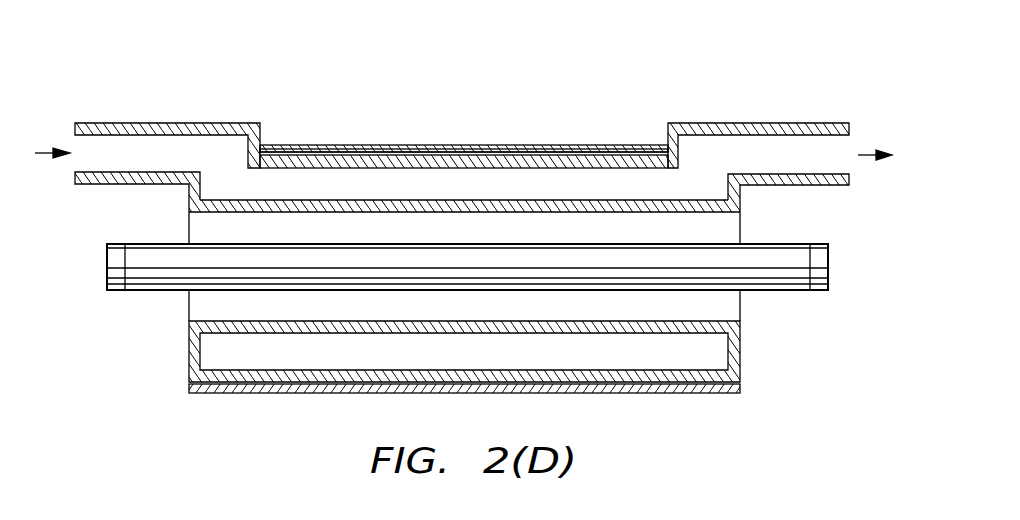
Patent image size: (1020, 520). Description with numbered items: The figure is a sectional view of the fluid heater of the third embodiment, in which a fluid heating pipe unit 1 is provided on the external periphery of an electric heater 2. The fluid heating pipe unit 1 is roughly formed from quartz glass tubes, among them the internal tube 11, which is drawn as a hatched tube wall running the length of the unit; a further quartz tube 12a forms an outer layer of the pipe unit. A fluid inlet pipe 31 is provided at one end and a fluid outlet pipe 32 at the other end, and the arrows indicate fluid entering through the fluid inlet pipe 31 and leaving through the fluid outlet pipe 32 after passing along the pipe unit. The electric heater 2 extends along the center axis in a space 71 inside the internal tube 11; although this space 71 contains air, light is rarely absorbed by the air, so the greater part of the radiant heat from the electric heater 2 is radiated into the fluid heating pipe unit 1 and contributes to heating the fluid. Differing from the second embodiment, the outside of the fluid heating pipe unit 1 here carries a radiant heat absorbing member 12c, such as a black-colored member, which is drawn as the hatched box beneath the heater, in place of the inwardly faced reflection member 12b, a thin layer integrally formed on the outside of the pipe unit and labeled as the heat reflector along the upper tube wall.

The fluid heating pipe unit 1 is at (278, 395).
The electric heater 2 is at (127, 290).
The internal tube 11 is at (393, 200).
The quartz tube 12a is at (333, 145).
The inwardly faced reflection member 12b is at (573, 148).
The radiant heat absorbing member 12c is at (741, 385).
The fluid inlet pipe 31 is at (128, 122).
The fluid outlet pipe 32 is at (807, 123).
The space 71 is at (738, 228).